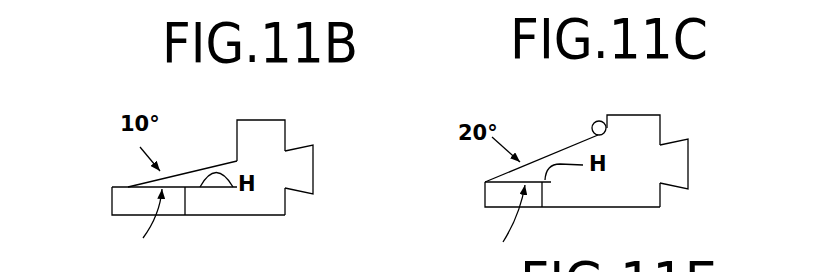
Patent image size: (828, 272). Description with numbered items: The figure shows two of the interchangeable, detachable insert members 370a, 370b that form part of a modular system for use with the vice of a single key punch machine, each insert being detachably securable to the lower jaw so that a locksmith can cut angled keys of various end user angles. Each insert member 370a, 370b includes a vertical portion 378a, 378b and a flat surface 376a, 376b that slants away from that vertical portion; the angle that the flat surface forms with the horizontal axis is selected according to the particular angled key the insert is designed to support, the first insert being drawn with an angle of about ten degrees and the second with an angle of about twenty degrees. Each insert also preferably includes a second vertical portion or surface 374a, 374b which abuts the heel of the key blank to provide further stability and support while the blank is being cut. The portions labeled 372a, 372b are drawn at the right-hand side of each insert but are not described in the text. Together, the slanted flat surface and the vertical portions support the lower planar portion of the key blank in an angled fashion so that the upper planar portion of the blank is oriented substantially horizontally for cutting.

In FIG. 11B, the insert member 370a is at (207, 138).
In FIG. 11B, the nozzle outlet portion 372a is at (310, 177).
In FIG. 11B, the second vertical portion 374a is at (238, 131).
In FIG. 11B, the flat surface 376a is at (135, 184).
In FIG. 11B, the vertical portion 378a is at (112, 200).
In FIG. 11C, the insert member 370b is at (642, 104).
In FIG. 11C, the nozzle outlet portion 372b is at (678, 172).
In FIG. 11C, the second vertical portion 374b is at (602, 135).
In FIG. 11C, the flat surface 376b is at (552, 152).
In FIG. 11C, the vertical portion 378b is at (484, 195).